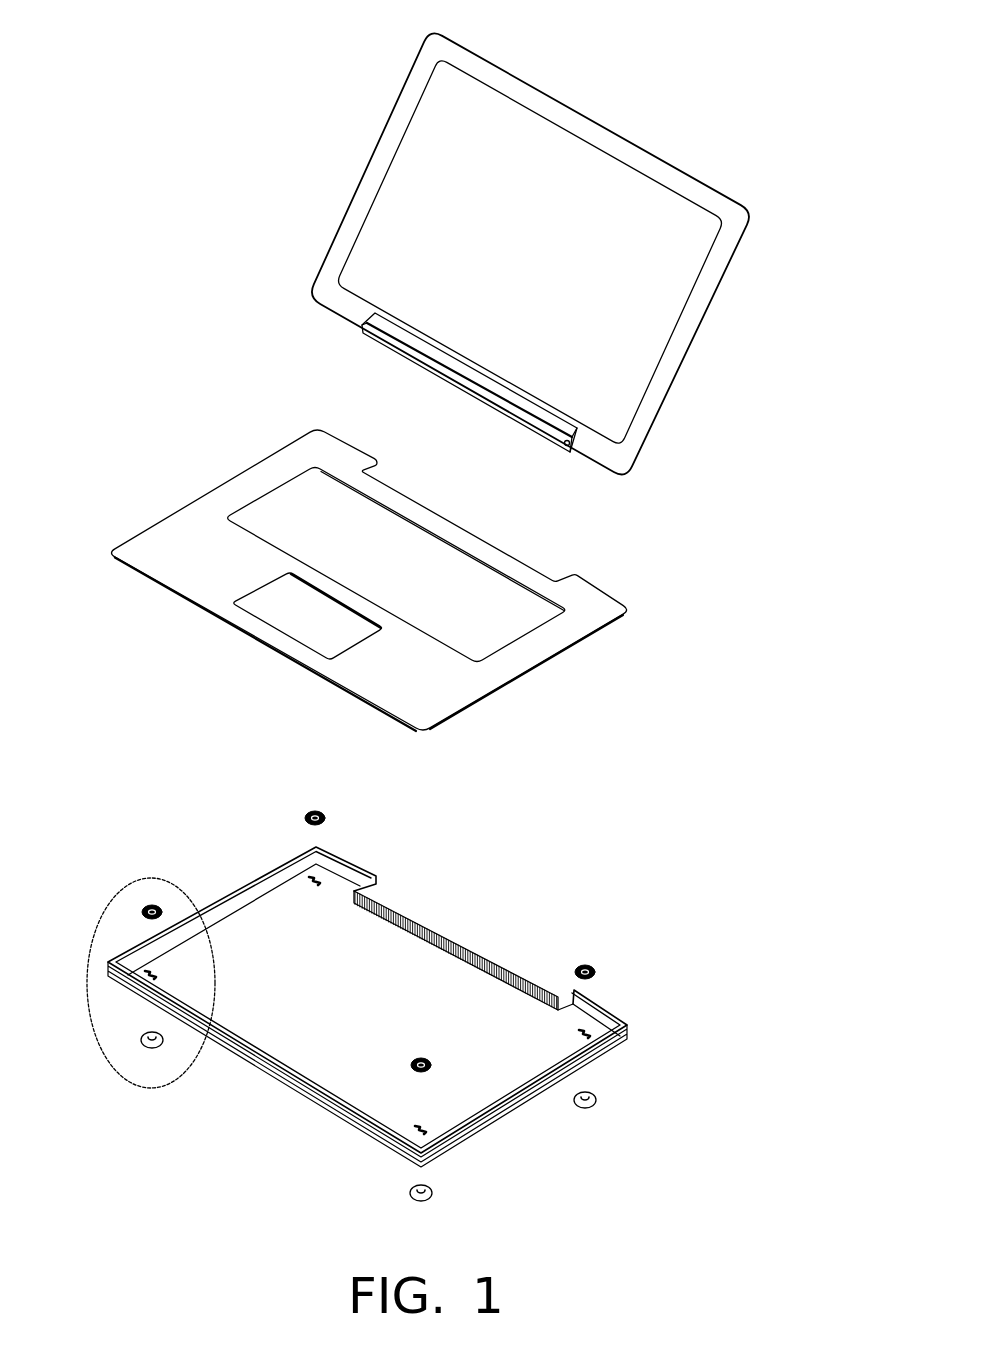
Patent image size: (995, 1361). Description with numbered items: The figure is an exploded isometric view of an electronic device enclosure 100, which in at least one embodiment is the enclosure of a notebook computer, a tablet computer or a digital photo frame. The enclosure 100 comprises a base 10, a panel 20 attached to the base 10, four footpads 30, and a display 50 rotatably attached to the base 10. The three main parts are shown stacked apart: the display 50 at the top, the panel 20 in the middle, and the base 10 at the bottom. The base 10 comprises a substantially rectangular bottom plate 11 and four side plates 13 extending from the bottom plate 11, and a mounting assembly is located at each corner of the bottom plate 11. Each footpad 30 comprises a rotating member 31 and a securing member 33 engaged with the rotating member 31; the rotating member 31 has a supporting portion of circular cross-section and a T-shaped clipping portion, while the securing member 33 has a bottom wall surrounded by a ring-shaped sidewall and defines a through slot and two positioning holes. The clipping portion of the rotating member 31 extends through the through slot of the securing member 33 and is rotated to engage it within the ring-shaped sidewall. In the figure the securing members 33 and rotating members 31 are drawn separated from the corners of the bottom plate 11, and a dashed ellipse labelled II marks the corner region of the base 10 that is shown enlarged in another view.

The electronic device enclosure 100 is at (212, 38).
The display 50 is at (664, 211).
The panel 20 is at (596, 604).
The base 10 is at (367, 1036).
The bottom plate 11 is at (466, 1103).
The side plate 13 is at (530, 1098).
The footpad 30 is at (445, 1002).
The securing member 33 is at (321, 812).
The rotating member 31 is at (411, 1127).
The enlarged detail region II is at (112, 900).